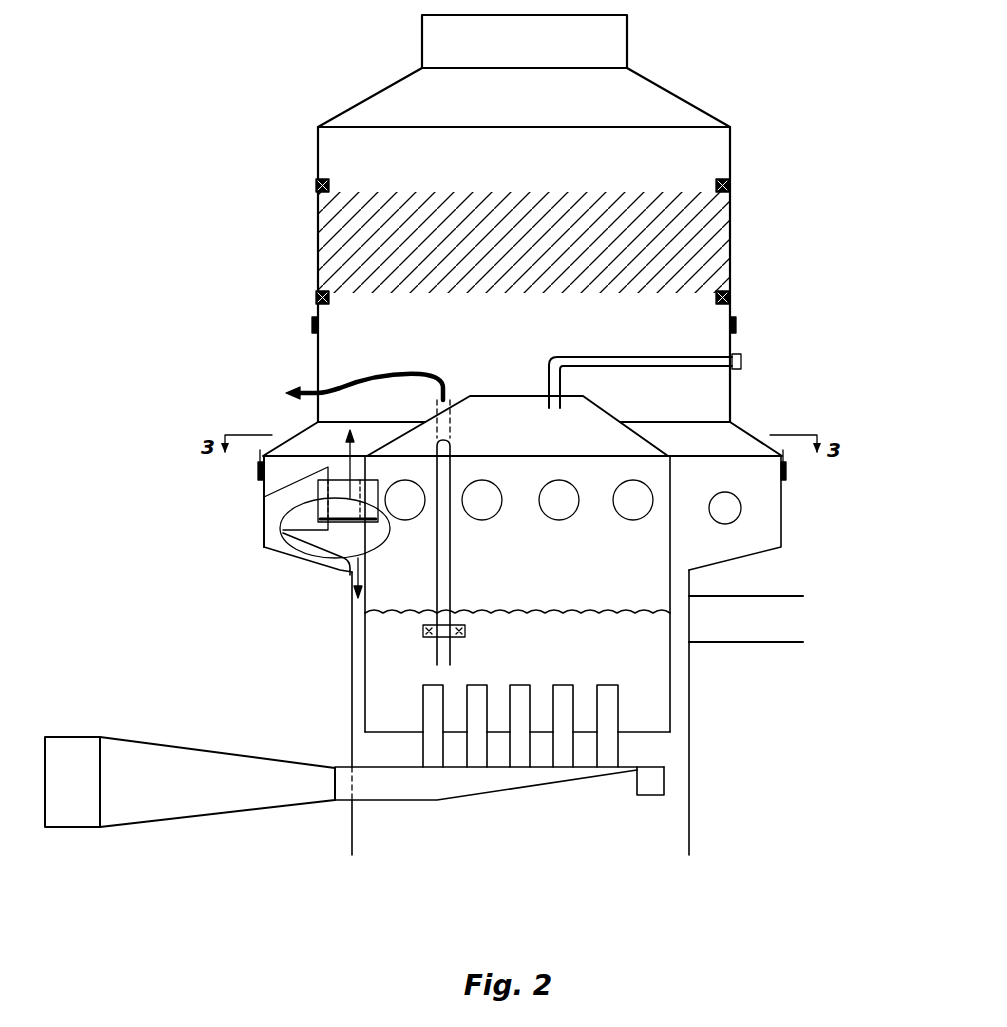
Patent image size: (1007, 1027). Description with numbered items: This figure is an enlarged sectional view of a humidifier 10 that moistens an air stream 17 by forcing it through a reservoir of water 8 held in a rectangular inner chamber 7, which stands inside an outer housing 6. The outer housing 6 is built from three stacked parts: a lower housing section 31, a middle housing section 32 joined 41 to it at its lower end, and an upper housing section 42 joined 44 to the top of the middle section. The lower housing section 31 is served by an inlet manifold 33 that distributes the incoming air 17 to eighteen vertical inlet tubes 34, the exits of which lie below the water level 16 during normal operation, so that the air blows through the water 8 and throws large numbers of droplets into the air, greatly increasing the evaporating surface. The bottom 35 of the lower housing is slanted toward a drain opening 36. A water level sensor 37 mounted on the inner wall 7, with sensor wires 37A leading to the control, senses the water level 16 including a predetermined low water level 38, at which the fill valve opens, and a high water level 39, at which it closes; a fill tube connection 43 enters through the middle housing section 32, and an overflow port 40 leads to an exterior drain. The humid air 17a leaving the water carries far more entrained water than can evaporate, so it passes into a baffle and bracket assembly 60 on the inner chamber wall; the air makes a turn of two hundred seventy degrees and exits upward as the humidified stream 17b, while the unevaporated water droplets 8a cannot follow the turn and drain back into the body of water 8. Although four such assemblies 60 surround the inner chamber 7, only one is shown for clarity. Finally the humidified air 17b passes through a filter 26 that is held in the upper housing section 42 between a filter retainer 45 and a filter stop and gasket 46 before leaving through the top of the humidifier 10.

The humidifier 10 is at (762, 210).
The outer housing 6 is at (689, 710).
The inner chamber 7 is at (672, 680).
The water 8 is at (517, 685).
The unevaporated water droplets 8a is at (352, 588).
The water level 16 is at (597, 612).
The air stream 17 is at (132, 779).
The humid air stream 17a is at (395, 538).
The humidified air stream 17b is at (352, 432).
The filter 26 is at (340, 245).
The lower housing section 31 is at (352, 607).
The middle housing section 32 is at (317, 408).
The inlet manifold 33 is at (47, 864).
The vertical inlet tubes 34 is at (605, 685).
The bottom 35 is at (365, 766).
The drain opening 36 is at (660, 770).
The water level sensor 37 is at (437, 652).
The sensor wires 37A is at (305, 388).
The low water level 38 is at (785, 642).
The high water level 39 is at (785, 596).
The overflow port 40 is at (745, 512).
The joint 41 is at (258, 462).
The upper housing section 42 is at (318, 160).
The fill tube connection 43 is at (741, 361).
The joint 44 is at (312, 330).
The filter retainer 45 is at (322, 297).
The filter stop and gasket 46 is at (322, 188).
The baffle and bracket assembly 60 is at (277, 508).